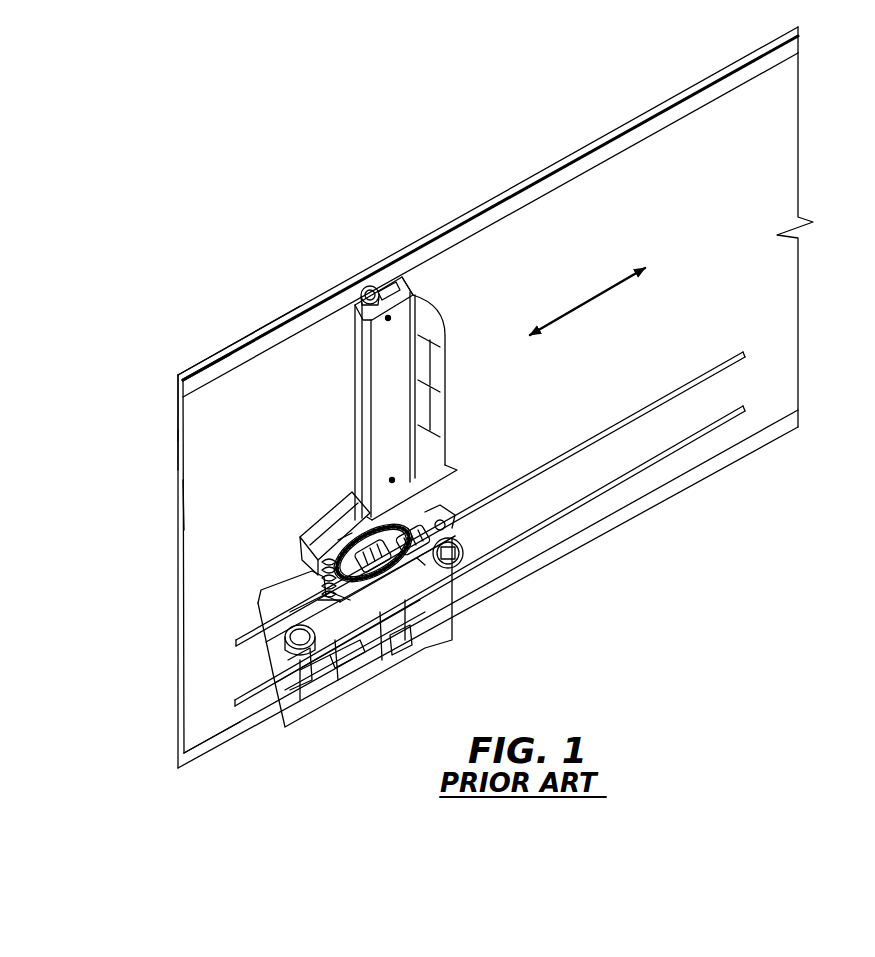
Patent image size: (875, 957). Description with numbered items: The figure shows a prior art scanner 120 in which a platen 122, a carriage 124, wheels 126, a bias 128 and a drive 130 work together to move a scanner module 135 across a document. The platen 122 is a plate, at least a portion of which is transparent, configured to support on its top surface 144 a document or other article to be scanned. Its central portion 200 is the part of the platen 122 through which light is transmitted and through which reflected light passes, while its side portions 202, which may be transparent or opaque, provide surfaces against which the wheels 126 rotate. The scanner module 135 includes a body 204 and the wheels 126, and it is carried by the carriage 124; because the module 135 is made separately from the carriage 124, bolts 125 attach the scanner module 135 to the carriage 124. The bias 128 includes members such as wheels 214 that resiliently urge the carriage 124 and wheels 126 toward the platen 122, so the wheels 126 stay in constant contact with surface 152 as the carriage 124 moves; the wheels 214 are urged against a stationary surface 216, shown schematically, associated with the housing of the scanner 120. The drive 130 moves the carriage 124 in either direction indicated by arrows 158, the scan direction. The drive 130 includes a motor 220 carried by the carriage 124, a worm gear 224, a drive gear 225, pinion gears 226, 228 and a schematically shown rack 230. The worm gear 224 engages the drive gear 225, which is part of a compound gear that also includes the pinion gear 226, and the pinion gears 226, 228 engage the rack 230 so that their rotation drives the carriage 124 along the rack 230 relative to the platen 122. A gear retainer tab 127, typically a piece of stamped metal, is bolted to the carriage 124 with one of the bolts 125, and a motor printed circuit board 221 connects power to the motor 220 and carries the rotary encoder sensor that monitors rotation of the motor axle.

The scanner 120 is at (228, 318).
The platen 122 is at (175, 432).
The carriage 124 is at (333, 500).
The bolts 125 is at (440, 522).
The wheels 126 is at (372, 290).
The gear retainer tab 127 is at (425, 512).
The bias 128 is at (465, 555).
The drive 130 is at (348, 533).
The scanner module 135 is at (418, 292).
The top surface 144 is at (178, 407).
The surface 152 is at (282, 367).
The arrows 158 is at (583, 302).
The central portion 200 is at (200, 497).
The side portions 202 is at (208, 372).
The body 204 is at (348, 410).
The wheels 214 is at (287, 657).
The stationary surface 216 is at (703, 432).
The motor 220 is at (347, 623).
The motor printed circuit board 221 is at (293, 673).
The worm gear 224 is at (345, 582).
The drive gear 225 is at (335, 545).
The pinion gear 226 is at (398, 567).
The pinion gear 228 is at (395, 556).
The rack 230 is at (592, 437).